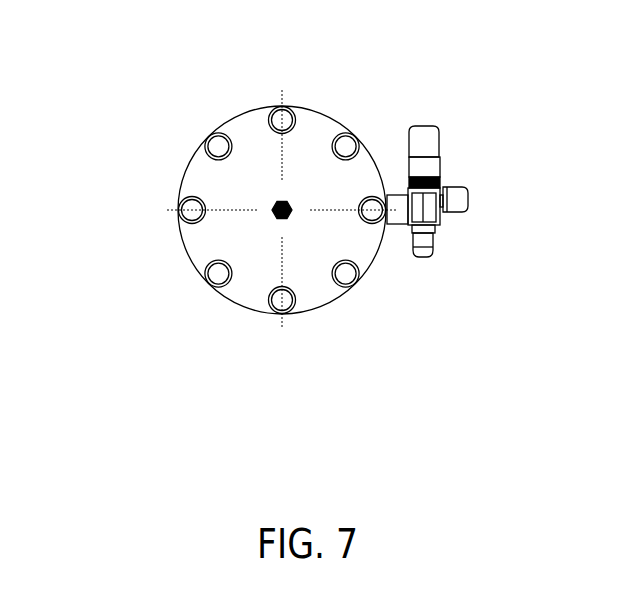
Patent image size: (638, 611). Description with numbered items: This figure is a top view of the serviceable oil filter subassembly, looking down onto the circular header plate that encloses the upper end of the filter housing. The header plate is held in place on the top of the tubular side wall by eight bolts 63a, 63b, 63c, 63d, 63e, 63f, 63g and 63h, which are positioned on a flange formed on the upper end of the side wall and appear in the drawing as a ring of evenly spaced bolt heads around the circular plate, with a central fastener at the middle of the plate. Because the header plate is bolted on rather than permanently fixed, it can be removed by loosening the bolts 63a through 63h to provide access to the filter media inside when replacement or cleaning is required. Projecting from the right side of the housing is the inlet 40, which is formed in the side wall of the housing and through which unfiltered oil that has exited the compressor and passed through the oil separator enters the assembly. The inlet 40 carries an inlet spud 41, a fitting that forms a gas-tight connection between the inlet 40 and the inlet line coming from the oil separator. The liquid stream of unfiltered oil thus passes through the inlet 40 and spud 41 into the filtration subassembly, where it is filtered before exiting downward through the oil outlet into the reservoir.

The inlet 40 is at (459, 261).
The inlet spud 41 is at (430, 208).
The bolt 63a is at (376, 202).
The bolt 63b is at (347, 282).
The bolt 63c is at (282, 300).
The bolt 63d is at (215, 272).
The bolt 63e is at (190, 207).
The bolt 63f is at (215, 148).
The bolt 63g is at (286, 108).
The bolt 63h is at (350, 133).